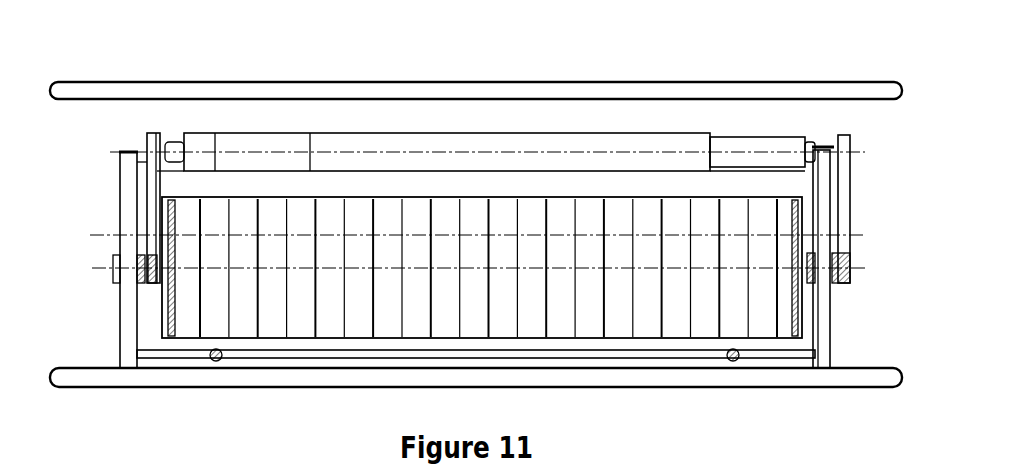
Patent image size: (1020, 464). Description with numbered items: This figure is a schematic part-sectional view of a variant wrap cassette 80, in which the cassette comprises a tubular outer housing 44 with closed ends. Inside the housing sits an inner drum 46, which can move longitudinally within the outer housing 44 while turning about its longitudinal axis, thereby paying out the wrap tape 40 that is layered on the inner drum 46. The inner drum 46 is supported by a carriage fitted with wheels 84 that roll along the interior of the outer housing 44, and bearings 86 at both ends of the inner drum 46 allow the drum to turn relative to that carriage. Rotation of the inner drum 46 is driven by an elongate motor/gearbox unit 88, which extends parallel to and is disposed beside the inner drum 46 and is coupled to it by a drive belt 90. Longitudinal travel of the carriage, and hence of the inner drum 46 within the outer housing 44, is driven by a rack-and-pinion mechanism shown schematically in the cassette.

The wrap cassette 80 is at (778, 17).
The tubular outer housing 44 is at (244, 90).
The bearings 86 is at (113, 255).
The drive belt 90 is at (153, 143).
The motor/gearbox unit 88 is at (618, 145).
The inner drum 46 is at (792, 302).
The wrap tape 40 is at (417, 213).
The wheels 84 is at (214, 365).